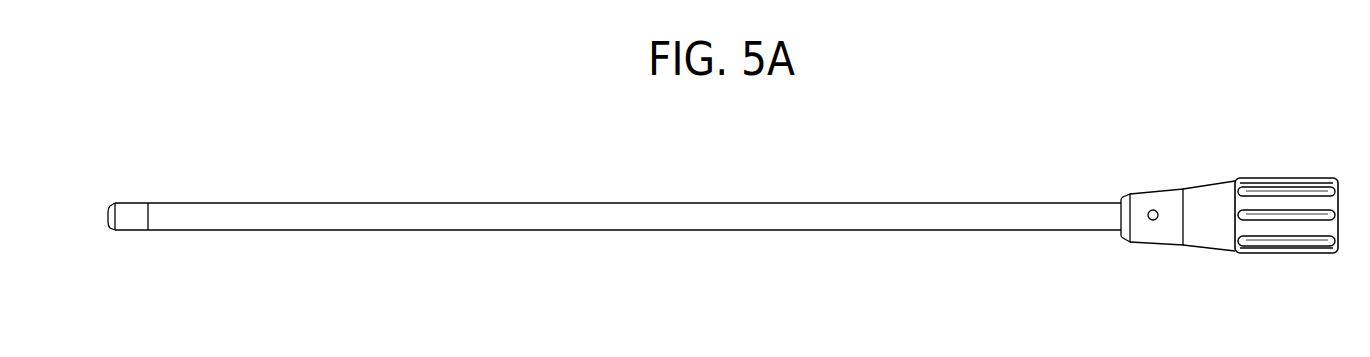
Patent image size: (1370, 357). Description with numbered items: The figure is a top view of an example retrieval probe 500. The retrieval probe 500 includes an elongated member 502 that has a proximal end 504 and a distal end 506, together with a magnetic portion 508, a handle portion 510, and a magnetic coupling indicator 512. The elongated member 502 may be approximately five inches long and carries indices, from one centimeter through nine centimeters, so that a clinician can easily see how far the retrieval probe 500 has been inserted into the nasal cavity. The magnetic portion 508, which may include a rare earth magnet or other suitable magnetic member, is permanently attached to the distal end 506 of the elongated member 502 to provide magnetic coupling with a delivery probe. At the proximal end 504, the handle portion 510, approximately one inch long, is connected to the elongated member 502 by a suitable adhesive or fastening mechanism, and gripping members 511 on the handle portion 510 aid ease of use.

The retrieval probe 500 is at (770, 142).
The elongated member 502 is at (618, 212).
The proximal end 504 is at (1088, 185).
The distal end 506 is at (232, 182).
The magnetic portion 508 is at (131, 185).
The handle portion 510 is at (1195, 247).
The gripping members 511 is at (1328, 240).
The magnetic coupling indicator 512 is at (1153, 210).